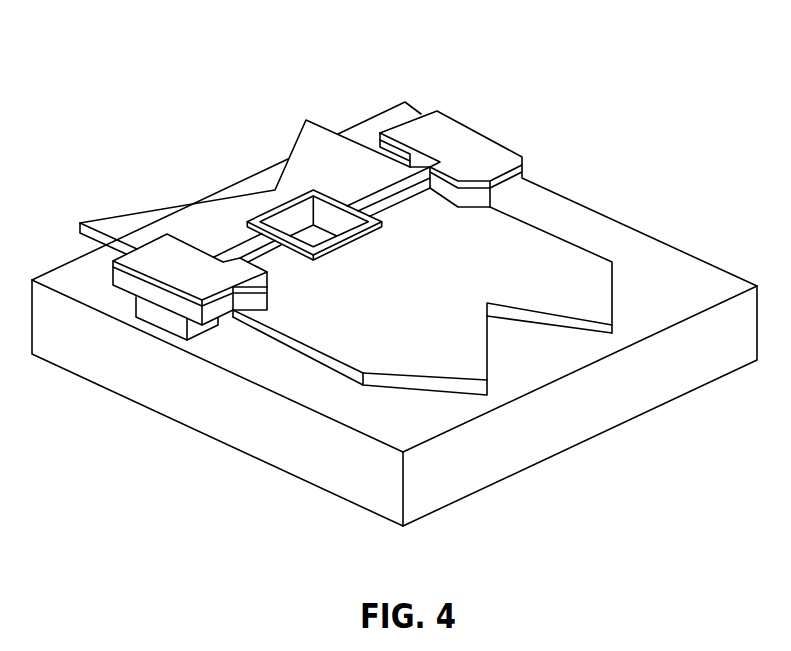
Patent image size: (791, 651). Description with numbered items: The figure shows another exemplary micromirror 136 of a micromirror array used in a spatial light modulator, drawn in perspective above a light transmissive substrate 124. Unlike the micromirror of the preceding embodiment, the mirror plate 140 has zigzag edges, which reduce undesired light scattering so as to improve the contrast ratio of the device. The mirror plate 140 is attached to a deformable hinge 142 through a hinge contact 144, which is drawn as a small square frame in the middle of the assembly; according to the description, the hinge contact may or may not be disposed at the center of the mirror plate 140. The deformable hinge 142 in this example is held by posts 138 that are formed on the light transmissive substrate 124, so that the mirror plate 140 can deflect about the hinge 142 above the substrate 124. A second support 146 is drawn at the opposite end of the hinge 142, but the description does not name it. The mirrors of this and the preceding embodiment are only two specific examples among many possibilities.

The light transmissive substrate 124 is at (570, 433).
The micromirror 136 is at (366, 228).
The posts 138 is at (456, 135).
The mirror plate 140 is at (590, 277).
The deformable hinge 142 is at (397, 193).
The hinge contact 144 is at (350, 236).
The second pad / electrode 146 is at (167, 322).